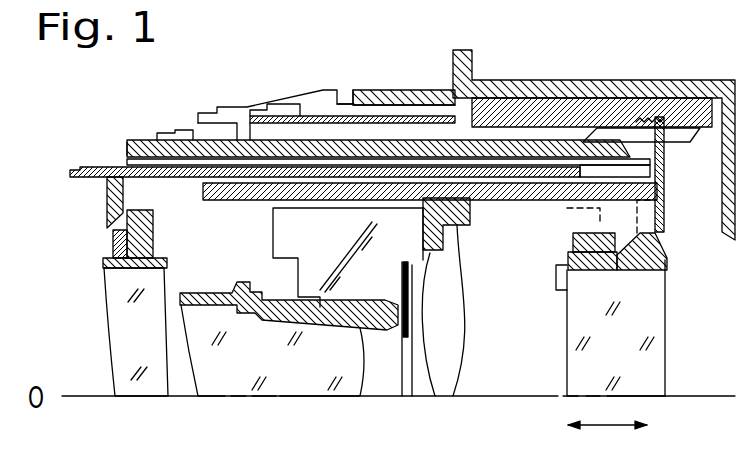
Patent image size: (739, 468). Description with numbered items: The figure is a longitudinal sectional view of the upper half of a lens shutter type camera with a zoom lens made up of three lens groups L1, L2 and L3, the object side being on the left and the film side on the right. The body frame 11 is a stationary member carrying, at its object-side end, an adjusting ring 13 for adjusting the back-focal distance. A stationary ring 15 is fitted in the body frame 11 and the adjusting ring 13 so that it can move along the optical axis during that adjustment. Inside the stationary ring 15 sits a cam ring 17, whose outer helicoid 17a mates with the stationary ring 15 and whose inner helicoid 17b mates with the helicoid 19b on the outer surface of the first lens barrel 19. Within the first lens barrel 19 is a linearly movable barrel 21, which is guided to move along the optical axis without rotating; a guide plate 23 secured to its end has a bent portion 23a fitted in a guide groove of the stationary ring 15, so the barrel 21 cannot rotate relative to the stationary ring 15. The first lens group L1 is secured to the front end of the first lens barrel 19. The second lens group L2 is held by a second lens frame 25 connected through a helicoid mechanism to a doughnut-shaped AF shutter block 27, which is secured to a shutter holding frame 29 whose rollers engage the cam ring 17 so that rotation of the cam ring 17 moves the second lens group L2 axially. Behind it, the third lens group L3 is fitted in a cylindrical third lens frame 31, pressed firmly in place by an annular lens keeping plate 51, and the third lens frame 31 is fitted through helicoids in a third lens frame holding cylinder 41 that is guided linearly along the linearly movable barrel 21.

The body frame 11 is at (508, 80).
The adjusting ring 13 is at (407, 90).
The stationary ring 15 is at (278, 116).
The cam ring 17 is at (413, 98).
The helicoid 17a is at (612, 133).
The helicoid 17b is at (227, 150).
The first lens barrel 19 is at (100, 166).
The helicoid 19b is at (540, 165).
The linearly movable barrel 21 is at (203, 192).
The guide plate 23 is at (665, 222).
The bent portion 23a is at (650, 117).
The second lens frame 25 is at (358, 396).
The AF shutter block 27 is at (437, 395).
The shutter holding frame 29 is at (453, 396).
The third lens frame 31 is at (657, 222).
The third lens frame holding cylinder 41 is at (572, 238).
The annular lens keeping plate 51 is at (556, 275).
The first lens group L1 is at (137, 396).
The second lens group L2 is at (285, 383).
The third lens group L3 is at (573, 390).